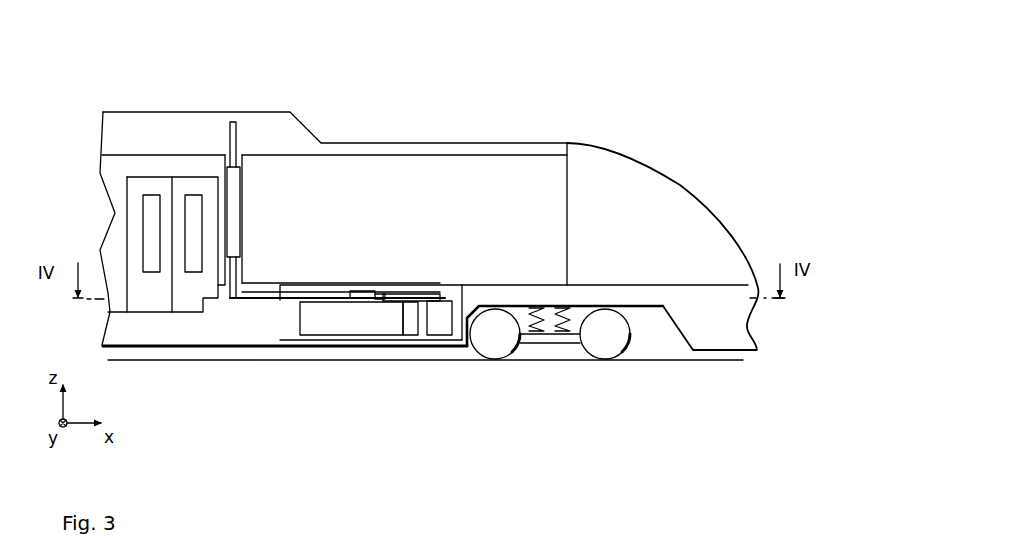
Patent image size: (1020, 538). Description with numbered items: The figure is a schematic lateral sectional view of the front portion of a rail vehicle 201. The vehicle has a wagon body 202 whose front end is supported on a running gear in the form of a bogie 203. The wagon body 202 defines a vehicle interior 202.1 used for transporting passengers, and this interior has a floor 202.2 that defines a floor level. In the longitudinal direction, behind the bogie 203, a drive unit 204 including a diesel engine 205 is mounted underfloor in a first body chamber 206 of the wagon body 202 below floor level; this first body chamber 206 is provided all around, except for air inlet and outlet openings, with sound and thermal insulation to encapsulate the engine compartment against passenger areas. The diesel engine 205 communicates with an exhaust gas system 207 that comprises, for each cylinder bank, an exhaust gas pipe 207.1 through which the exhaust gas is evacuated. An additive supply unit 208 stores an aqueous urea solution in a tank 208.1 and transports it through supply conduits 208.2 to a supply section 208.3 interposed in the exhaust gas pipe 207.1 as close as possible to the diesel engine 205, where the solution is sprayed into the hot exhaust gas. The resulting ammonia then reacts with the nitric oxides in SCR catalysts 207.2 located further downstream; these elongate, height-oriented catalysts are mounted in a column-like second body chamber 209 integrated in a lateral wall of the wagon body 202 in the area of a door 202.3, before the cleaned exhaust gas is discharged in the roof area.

The rail vehicle 201 is at (698, 66).
The wagon body 202 is at (660, 159).
The vehicle interior 202.1 is at (543, 152).
The floor 202.2 is at (365, 282).
The door 202.3 is at (172, 175).
The bogie 203 is at (617, 363).
The drive unit 204 is at (313, 340).
The diesel engine 205 is at (372, 338).
The first body chamber 206 is at (397, 341).
The exhaust gas system 207 is at (242, 119).
The exhaust gas pipe 207.1 is at (284, 304).
The SCR catalyst 207.2 is at (235, 166).
The additive supply unit 208 is at (424, 282).
The tank 208.1 is at (452, 338).
The supply conduit 208.2 is at (407, 303).
The supply section 208.3 is at (363, 303).
The second body chamber 209 is at (248, 154).